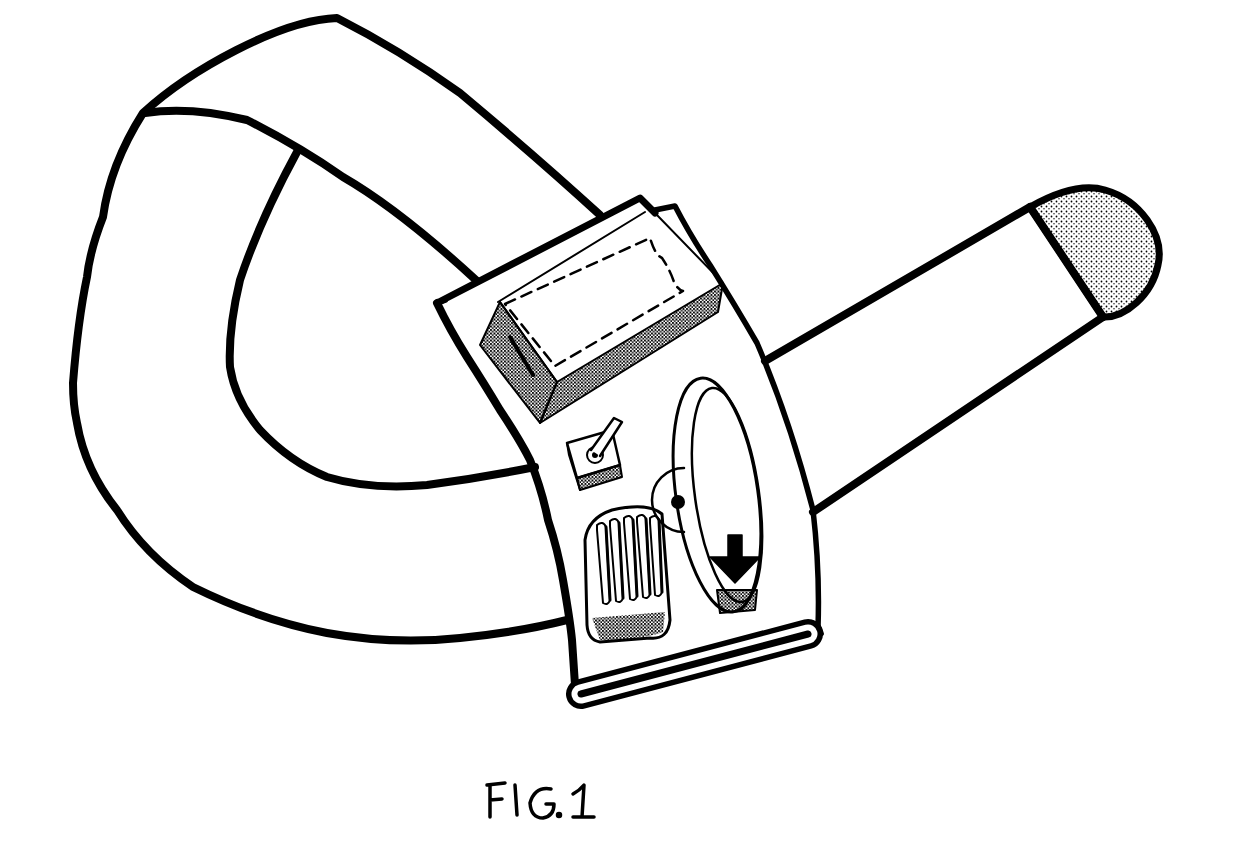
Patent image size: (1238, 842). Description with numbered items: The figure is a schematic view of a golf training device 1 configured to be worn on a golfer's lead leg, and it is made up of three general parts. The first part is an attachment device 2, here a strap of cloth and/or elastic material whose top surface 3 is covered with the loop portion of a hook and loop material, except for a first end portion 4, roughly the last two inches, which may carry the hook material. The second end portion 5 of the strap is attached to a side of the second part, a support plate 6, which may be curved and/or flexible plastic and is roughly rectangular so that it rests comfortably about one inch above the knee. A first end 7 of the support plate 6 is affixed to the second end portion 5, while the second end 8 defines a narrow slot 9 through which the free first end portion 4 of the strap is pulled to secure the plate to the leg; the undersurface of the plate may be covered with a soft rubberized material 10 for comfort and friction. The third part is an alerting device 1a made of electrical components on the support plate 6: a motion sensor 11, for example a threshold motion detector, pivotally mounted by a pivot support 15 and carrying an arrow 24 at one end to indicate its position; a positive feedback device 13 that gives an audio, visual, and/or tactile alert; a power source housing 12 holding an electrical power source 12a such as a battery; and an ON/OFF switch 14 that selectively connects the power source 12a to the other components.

The golf training device 1 is at (898, 90).
The alerting device 1a is at (687, 623).
The attachment device 2 is at (982, 373).
The top surface 3 is at (403, 83).
The first end portion 4 is at (1160, 248).
The second end portion 5 is at (541, 241).
The support plate 6 is at (785, 587).
The first end 7 is at (443, 293).
The second end 8 is at (798, 650).
The narrow slot 9 is at (823, 627).
The soft rubberized material 10 is at (497, 380).
The motion sensor 11 is at (713, 447).
The power source housing 12 is at (670, 208).
The electrical power source 12a is at (663, 247).
The positive feedback device 13 is at (577, 537).
The ON/OFF switch 14 is at (620, 413).
The pivot support 15 is at (670, 487).
The arrow 24 is at (770, 555).